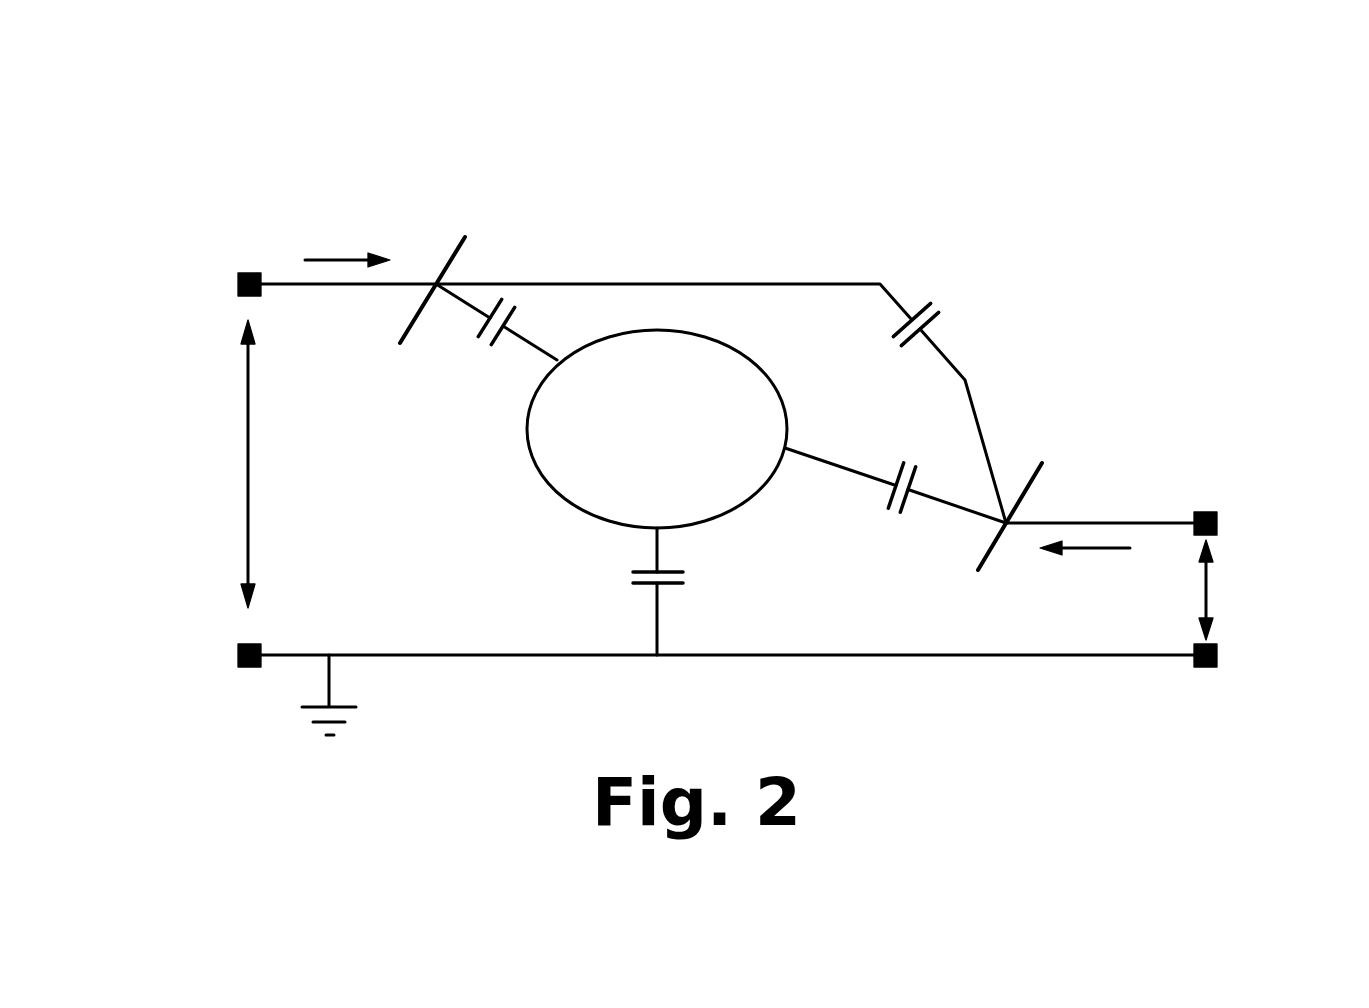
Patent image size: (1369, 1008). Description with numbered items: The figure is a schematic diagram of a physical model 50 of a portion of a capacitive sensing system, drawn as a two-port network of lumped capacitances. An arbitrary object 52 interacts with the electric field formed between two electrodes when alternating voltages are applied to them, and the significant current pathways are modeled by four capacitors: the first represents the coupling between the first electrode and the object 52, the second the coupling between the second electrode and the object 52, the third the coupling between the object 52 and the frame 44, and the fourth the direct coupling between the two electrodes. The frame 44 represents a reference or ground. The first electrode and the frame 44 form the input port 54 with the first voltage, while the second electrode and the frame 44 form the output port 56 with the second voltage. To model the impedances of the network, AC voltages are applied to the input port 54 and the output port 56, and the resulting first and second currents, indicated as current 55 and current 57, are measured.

The physical model 50 is at (872, 137).
The object 52 is at (761, 370).
The input port 54 is at (152, 492).
The current I1 55 is at (330, 197).
The output port 56 is at (1300, 526).
The current I2 57 is at (1075, 578).
The frame 44 is at (413, 655).